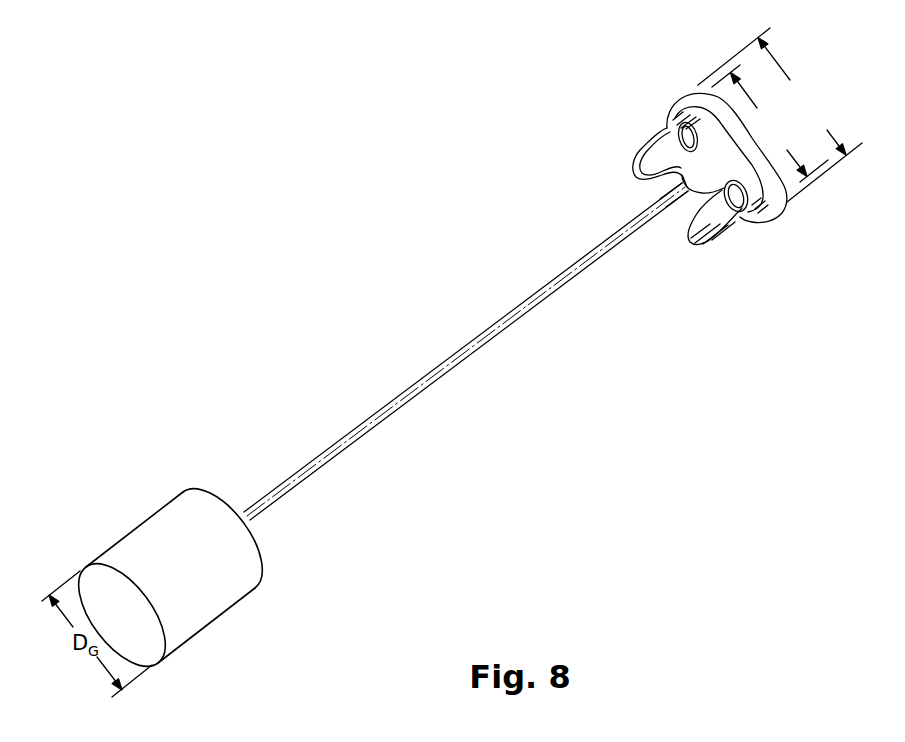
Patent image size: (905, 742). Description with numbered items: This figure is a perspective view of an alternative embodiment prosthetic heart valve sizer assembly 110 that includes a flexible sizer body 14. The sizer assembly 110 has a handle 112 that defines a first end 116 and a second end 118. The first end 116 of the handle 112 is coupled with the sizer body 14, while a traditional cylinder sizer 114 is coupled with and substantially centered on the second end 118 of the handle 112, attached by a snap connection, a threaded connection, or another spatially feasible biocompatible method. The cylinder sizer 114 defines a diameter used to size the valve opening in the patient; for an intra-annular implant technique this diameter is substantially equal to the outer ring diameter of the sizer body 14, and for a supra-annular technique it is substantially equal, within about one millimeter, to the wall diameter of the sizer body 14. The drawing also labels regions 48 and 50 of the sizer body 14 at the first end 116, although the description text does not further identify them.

The sizer body 14 is at (658, 102).
The plate 48 is at (774, 200).
The clip 50 is at (723, 213).
The prosthetic heart valve sizer assembly 110 is at (300, 262).
The handle 112 is at (477, 342).
The traditional cylinder sizer 114 is at (187, 502).
The first end 116 is at (672, 200).
The second end 118 is at (273, 498).